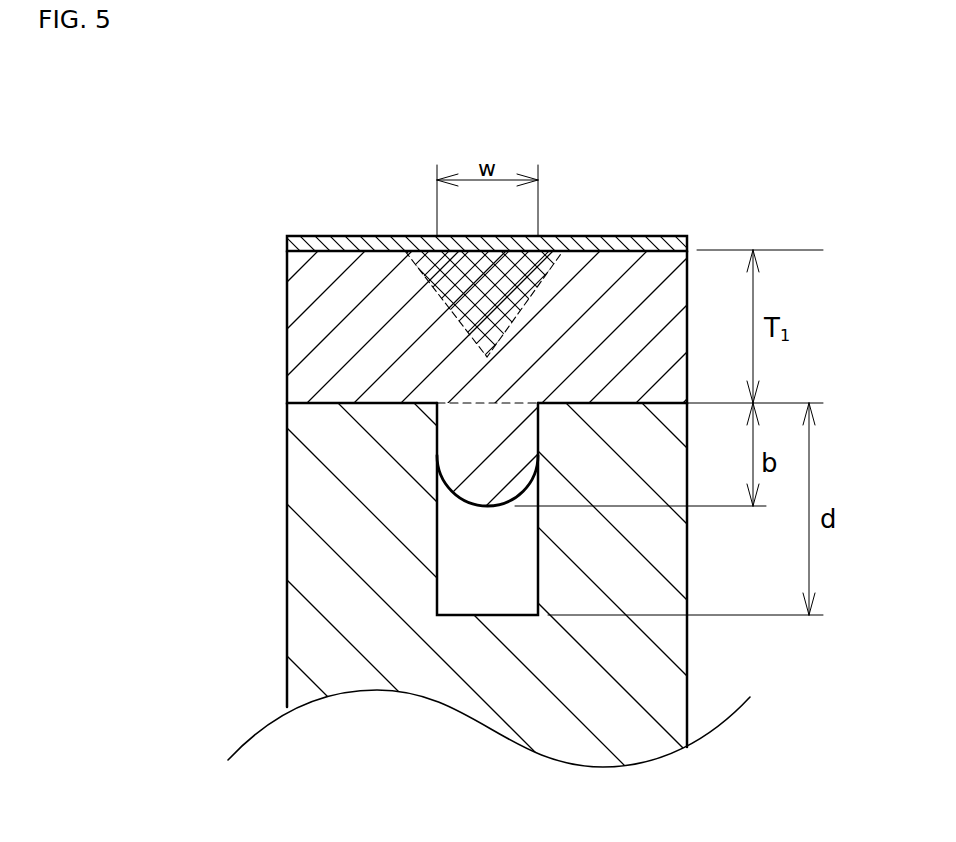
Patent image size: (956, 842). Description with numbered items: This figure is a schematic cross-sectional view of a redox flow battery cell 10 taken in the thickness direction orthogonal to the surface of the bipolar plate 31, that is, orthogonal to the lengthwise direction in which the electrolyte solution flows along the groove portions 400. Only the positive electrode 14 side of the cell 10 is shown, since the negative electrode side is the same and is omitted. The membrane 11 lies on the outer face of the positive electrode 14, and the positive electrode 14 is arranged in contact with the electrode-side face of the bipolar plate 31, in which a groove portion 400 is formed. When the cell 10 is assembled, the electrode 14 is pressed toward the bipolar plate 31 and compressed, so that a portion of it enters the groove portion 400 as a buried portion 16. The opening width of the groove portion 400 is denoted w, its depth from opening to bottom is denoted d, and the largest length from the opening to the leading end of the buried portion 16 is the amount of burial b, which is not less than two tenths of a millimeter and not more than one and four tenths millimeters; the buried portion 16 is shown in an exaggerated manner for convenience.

The cell 10 is at (243, 232).
The membrane 11 is at (342, 243).
The positive electrode 14 is at (310, 317).
The buried portion 16 is at (480, 452).
The bipolar plate 31 is at (337, 518).
The groove portion 400 is at (440, 595).